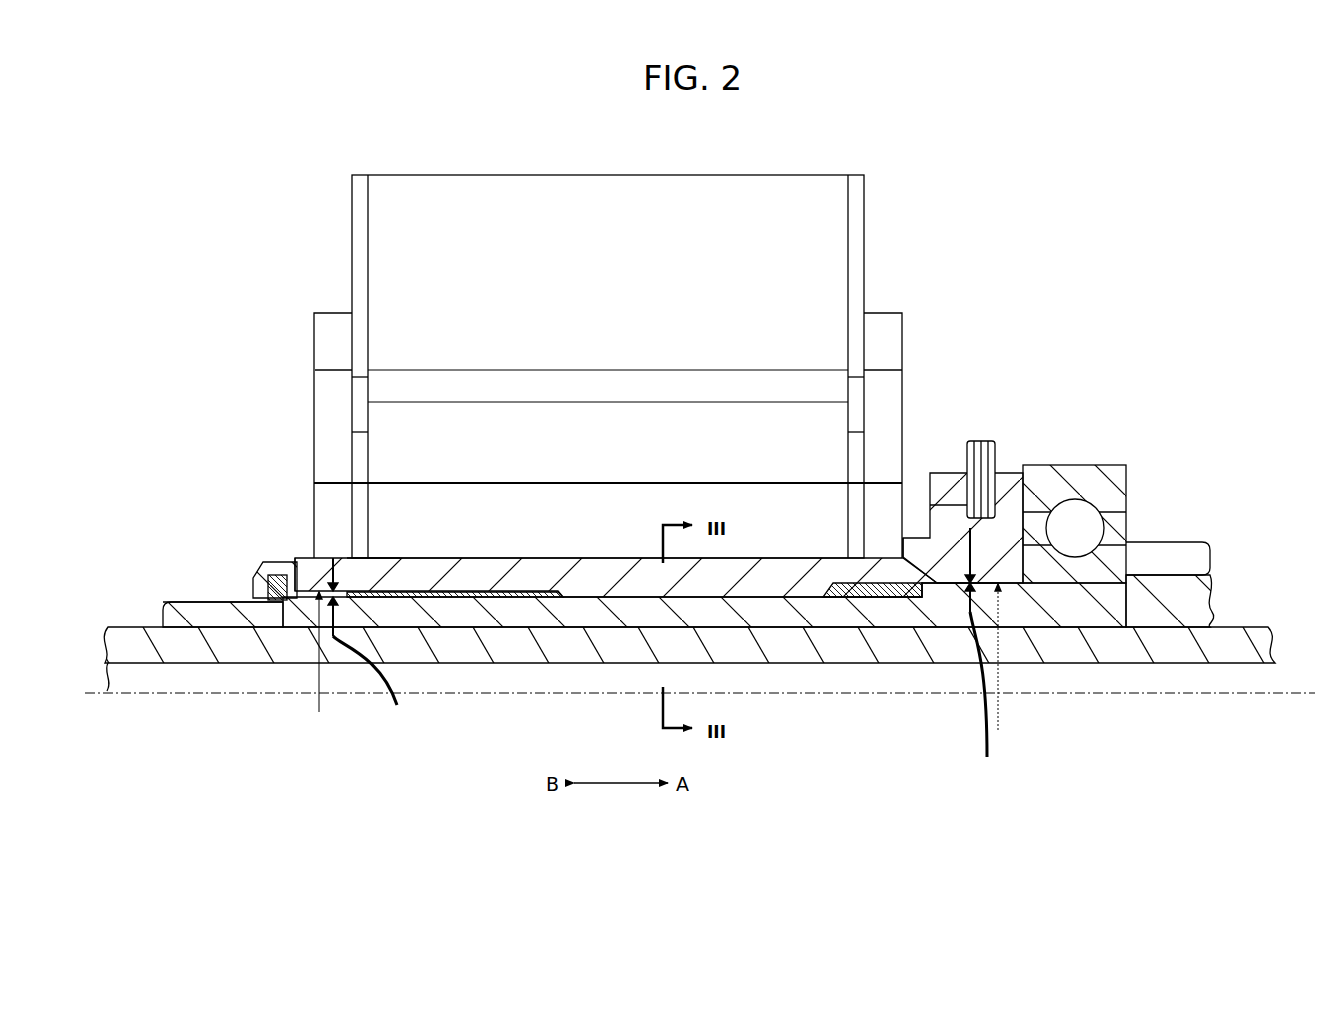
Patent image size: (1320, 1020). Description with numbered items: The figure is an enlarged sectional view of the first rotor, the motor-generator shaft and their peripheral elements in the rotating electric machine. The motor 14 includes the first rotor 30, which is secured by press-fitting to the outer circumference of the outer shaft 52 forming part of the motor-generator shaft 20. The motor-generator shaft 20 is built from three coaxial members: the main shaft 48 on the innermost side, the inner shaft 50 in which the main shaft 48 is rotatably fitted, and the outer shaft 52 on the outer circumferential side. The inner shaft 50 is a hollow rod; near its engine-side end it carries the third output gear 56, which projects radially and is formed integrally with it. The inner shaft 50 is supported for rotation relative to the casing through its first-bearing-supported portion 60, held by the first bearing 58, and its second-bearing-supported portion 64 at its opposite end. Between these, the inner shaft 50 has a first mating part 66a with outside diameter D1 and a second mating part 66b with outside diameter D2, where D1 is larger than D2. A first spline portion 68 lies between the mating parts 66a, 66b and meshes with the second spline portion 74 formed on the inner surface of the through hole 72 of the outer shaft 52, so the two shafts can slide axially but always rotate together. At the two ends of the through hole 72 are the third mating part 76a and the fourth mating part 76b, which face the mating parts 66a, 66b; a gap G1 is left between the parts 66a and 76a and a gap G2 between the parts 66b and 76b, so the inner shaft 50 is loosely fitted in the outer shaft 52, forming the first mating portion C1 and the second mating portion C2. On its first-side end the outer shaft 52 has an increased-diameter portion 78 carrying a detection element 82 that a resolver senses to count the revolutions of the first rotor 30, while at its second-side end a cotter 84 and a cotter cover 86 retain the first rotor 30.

The motor 14 is at (898, 192).
The motor-generator shaft 20 is at (210, 590).
The first rotor 30 is at (745, 177).
The main shaft 48 is at (1240, 628).
The inner shaft 50 is at (1196, 605).
The outer shaft 52 is at (552, 553).
The third output gear 56 is at (1188, 542).
The first bearing 58 is at (1082, 470).
The first-bearing-supported portion 60 is at (1098, 548).
The second-bearing-supported portion 64 is at (168, 603).
The first mating part 66a is at (903, 560).
The second mating part 66b is at (320, 588).
The first spline portion 68 is at (850, 598).
The through hole 72 is at (522, 598).
The second spline portion 74 is at (772, 590).
The third mating part 76a is at (965, 600).
The fourth mating part 76b is at (375, 557).
The increased-diameter portion 78 is at (935, 472).
The detection element 82 is at (985, 440).
The cotter 84 is at (278, 602).
The cotter cover 86 is at (258, 584).
The gap G1 is at (988, 655).
The gap G2 is at (380, 644).
The first mating portion C1 is at (937, 600).
The second mating portion C2 is at (334, 560).
The diameter of first mating part D1 is at (1030, 661).
The diameter of second mating part D2 is at (353, 661).